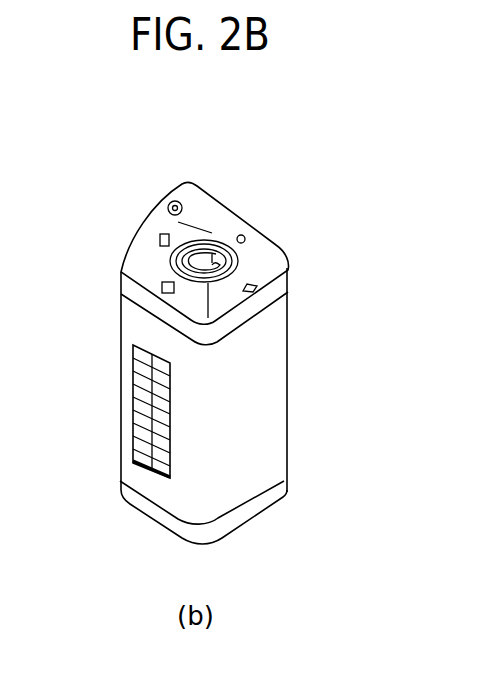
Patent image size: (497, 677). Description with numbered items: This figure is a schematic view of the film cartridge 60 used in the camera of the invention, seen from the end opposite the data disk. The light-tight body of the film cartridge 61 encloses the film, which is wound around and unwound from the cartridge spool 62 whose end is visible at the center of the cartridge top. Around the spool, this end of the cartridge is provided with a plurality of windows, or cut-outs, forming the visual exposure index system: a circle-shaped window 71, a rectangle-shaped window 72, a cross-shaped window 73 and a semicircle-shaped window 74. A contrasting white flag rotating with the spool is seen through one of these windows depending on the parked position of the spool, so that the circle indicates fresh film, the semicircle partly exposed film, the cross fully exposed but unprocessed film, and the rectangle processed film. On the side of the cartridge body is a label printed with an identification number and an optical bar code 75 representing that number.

The film cartridge 60 is at (165, 181).
The film cartridge 61 is at (260, 412).
The cartridge spool 62 is at (237, 259).
The circle-shaped window 71 is at (246, 236).
The rectangle-shaped window 72 is at (158, 240).
The cross-shaped window 73 is at (161, 284).
The semicircle-shaped window 74 is at (257, 290).
The optical bar code 75 is at (132, 430).